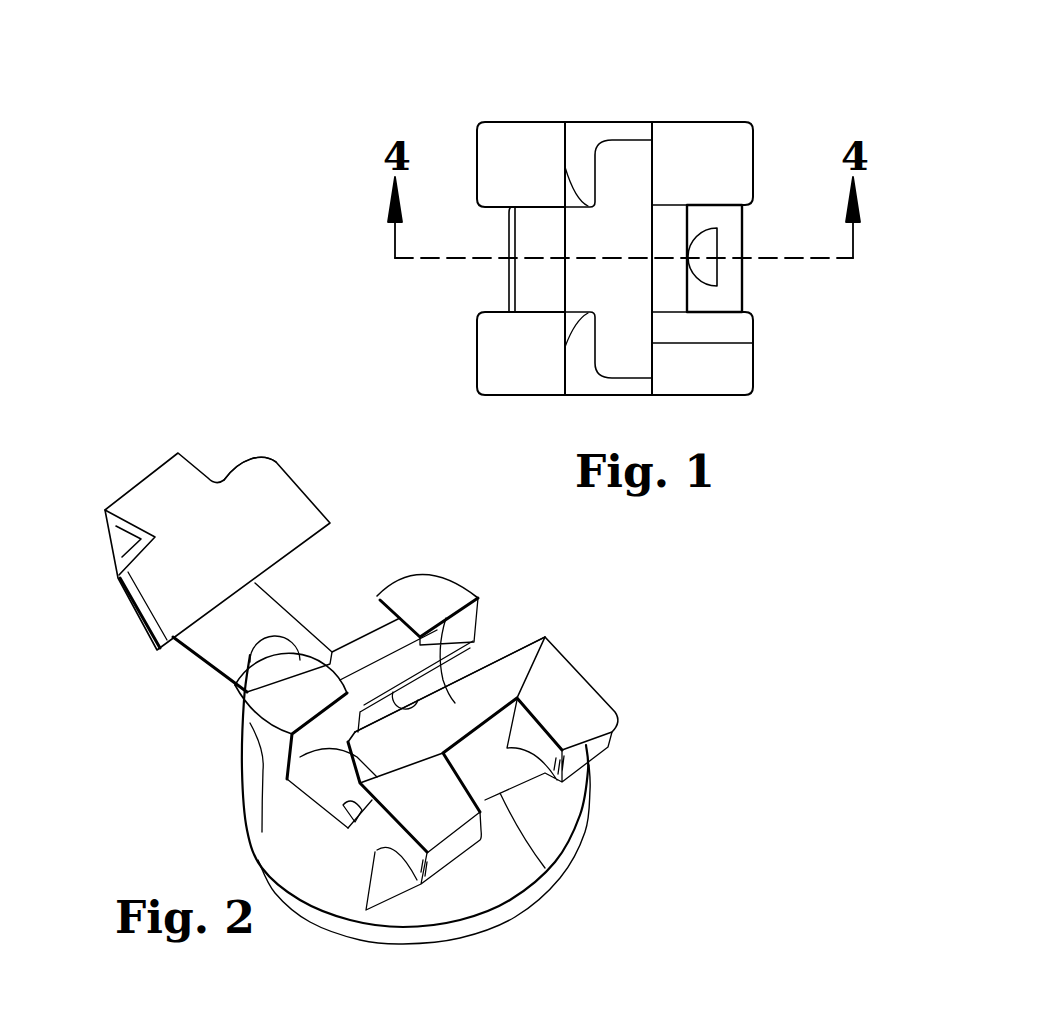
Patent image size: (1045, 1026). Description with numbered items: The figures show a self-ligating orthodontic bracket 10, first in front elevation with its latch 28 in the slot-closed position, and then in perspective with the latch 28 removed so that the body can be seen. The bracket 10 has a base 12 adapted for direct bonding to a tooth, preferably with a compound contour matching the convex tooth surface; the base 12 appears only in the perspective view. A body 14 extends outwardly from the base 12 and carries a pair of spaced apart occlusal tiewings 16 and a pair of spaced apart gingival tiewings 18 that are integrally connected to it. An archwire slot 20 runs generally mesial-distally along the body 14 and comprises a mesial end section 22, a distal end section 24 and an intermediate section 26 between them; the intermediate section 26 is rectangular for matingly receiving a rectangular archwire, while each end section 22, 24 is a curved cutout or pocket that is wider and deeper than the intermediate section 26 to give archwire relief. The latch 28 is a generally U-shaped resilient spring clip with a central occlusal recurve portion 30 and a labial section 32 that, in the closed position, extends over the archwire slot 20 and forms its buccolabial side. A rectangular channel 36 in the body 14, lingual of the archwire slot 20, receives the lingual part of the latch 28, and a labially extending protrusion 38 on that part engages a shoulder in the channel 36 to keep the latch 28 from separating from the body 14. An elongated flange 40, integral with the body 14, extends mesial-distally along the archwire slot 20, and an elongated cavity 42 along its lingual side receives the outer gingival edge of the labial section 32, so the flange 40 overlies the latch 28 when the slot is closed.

In FIG. 1, the orthodontic bracket 10 is at (550, 97).
In FIG. 2, the base 12 is at (458, 895).
In FIG. 1, the body 14 is at (692, 125).
In FIG. 2, the body 14 is at (288, 845).
In FIG. 1, the occlusal tiewings 16 is at (490, 144).
In FIG. 2, the occlusal tiewings 16 is at (448, 590).
In FIG. 1, the gingival tiewings 18 is at (733, 141).
In FIG. 2, the gingival tiewings 18 is at (580, 697).
In FIG. 1, the archwire slot 20 is at (569, 126).
In FIG. 2, the archwire slot 20 is at (483, 648).
In FIG. 1, the mesial end section 22 is at (578, 382).
In FIG. 2, the mesial end section 22 is at (337, 798).
In FIG. 1, the distal end section 24 is at (585, 138).
In FIG. 2, the distal end section 24 is at (488, 663).
In FIG. 2, the intermediate section 26 is at (400, 700).
In FIG. 1, the latch 28 is at (508, 290).
In FIG. 2, the latch 28 is at (212, 472).
In FIG. 2, the occlusal recurve portion 30 is at (103, 547).
In FIG. 1, the labial section 32 is at (630, 210).
In FIG. 2, the labial section 32 is at (220, 530).
In FIG. 2, the rectangular channel 36 is at (465, 722).
In FIG. 1, the protrusion 38 is at (707, 274).
In FIG. 1, the flange 40 is at (733, 341).
In FIG. 2, the flange 40 is at (497, 782).
In FIG. 2, the cavity 42 is at (330, 800).